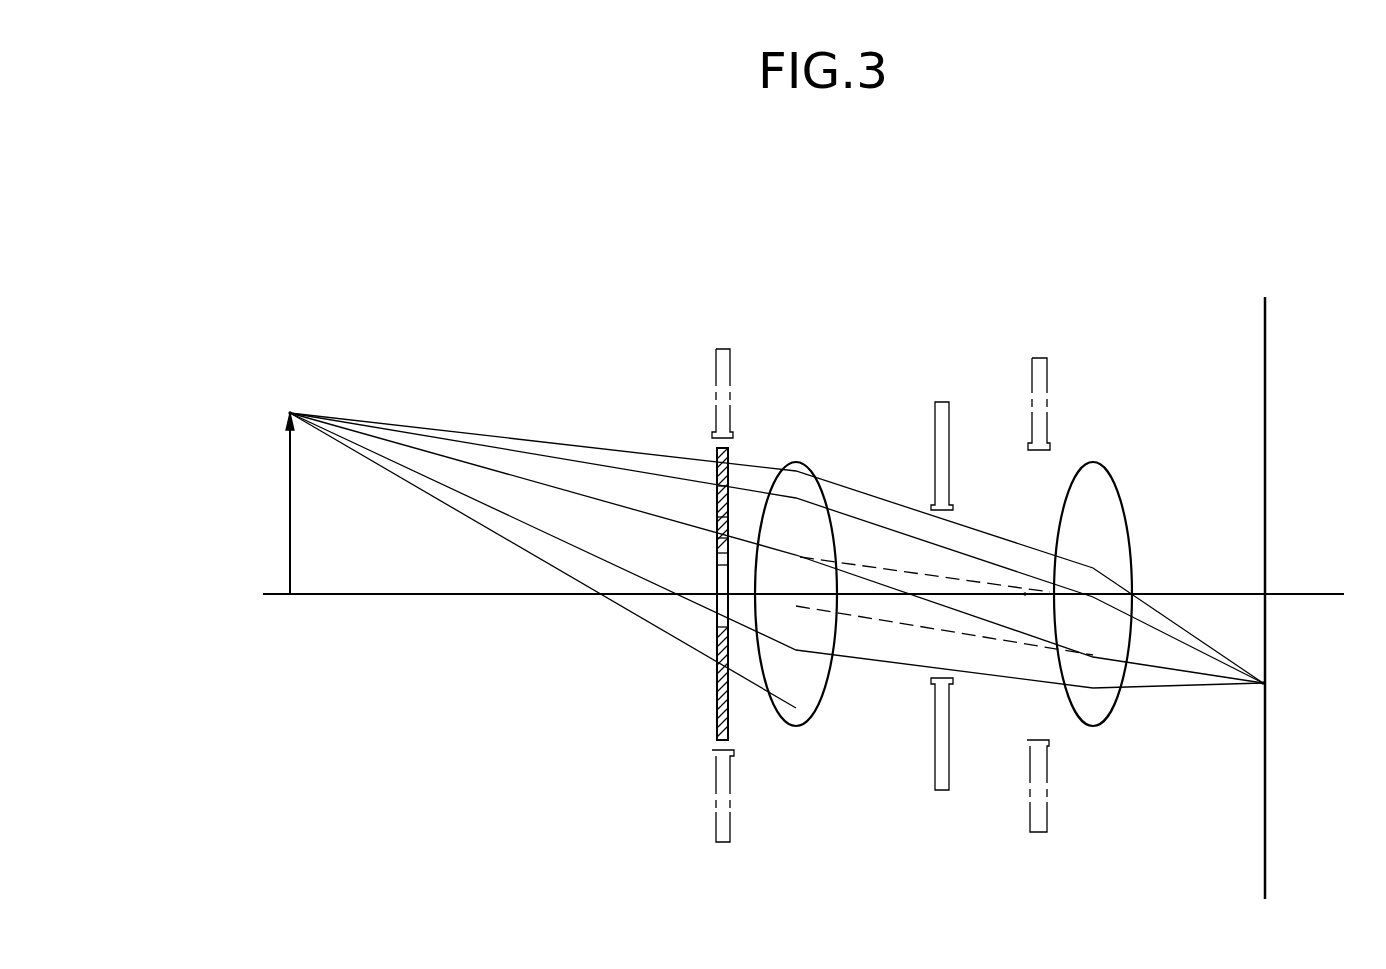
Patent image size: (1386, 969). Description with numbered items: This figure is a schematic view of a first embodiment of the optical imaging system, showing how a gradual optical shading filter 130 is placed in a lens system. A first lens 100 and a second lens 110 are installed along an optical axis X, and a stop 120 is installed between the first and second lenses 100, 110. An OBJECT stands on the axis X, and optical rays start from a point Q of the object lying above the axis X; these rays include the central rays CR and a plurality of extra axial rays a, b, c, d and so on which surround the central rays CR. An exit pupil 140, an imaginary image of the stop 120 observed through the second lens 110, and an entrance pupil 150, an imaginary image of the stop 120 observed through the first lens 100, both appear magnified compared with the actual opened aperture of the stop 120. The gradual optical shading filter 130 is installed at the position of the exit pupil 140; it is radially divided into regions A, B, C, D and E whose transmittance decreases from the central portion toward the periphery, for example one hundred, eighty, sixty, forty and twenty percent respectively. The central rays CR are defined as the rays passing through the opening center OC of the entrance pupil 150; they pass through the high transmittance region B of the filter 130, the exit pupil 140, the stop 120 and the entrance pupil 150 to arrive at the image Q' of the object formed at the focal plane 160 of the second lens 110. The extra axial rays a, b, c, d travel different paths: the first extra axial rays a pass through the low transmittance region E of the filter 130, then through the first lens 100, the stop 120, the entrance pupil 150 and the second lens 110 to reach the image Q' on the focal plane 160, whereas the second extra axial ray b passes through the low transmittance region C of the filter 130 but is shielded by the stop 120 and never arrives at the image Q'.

The first lens 100 is at (797, 727).
The second lens 110 is at (1100, 727).
The stop 120 is at (950, 786).
The gradual optical shading filter 130 is at (718, 722).
The exit pupil 140 is at (728, 378).
The entrance pupil 150 is at (1042, 818).
The focal plane 160 is at (1268, 858).
The object point Q is at (285, 396).
The image of the object Q' is at (1283, 689).
The optical axis X is at (312, 596).
The object OBJECT is at (288, 513).
The central rays CR is at (483, 465).
The opening center OC is at (1026, 592).
The first extra axial rays a is at (566, 444).
The second extra axial ray b is at (548, 574).
The extra axial ray c is at (591, 553).
The extra axial ray d is at (623, 470).
The region A is at (718, 565).
The region B is at (718, 538).
The region C is at (727, 517).
The region D is at (727, 486).
The region E is at (722, 452).